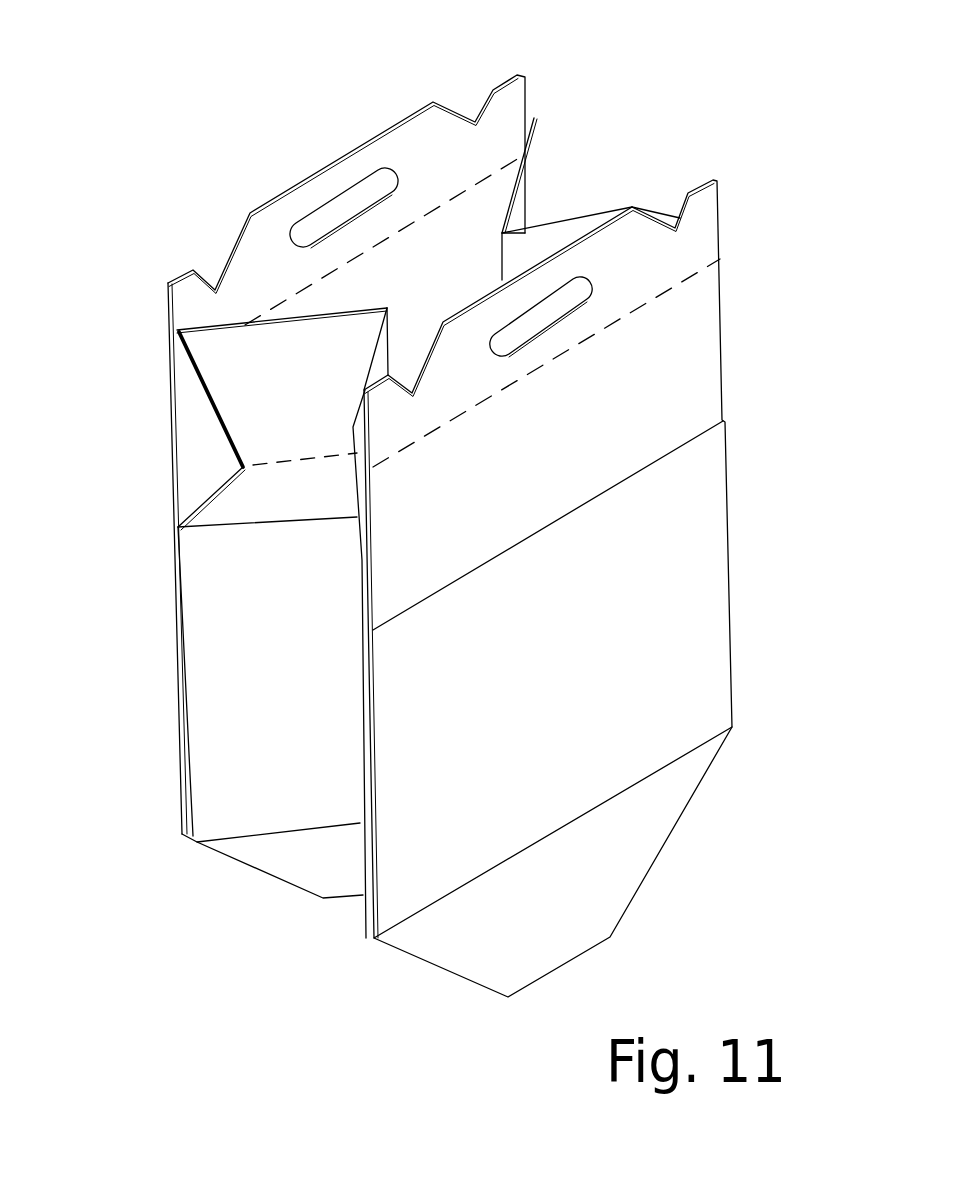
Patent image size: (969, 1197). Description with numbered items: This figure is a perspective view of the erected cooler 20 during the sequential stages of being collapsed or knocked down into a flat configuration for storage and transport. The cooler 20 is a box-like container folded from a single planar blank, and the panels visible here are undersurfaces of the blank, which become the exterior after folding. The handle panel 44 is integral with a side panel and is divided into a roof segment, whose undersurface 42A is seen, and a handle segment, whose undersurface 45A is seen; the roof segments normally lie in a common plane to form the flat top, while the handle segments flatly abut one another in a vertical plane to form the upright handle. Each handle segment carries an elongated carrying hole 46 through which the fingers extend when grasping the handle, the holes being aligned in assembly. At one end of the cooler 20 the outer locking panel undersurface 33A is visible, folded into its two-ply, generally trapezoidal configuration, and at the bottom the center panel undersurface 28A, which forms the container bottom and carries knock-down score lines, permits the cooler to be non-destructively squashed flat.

The cooler 20 is at (234, 82).
The handle segment undersurface 45A is at (700, 238).
The handle panel 44 is at (747, 300).
The roof segment undersurface 42A is at (670, 381).
The carrying hole 46 is at (552, 308).
The outer locking panel undersurface 33A is at (278, 385).
The center panel undersurface 28A is at (617, 845).